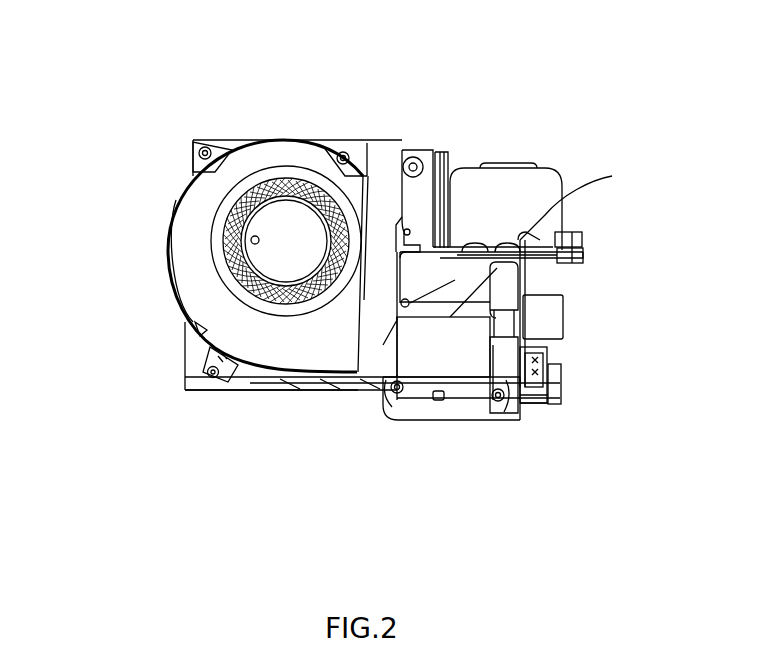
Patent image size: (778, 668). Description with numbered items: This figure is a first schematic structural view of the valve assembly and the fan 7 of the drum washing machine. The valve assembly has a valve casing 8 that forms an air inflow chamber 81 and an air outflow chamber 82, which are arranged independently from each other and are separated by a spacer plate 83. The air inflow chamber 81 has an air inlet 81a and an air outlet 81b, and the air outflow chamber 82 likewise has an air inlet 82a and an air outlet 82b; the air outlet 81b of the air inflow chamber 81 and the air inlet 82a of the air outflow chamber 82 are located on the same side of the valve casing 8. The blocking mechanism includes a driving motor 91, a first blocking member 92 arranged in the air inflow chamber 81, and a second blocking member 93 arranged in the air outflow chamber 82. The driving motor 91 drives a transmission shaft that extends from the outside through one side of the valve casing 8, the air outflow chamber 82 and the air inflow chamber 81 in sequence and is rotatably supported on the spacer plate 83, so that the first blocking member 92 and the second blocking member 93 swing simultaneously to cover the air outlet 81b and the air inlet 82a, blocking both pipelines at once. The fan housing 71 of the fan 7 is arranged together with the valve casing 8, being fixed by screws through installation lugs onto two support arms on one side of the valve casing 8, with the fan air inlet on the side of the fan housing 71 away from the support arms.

The fan 7 is at (282, 182).
The fan housing 71 is at (190, 243).
The valve casing 8 is at (440, 420).
The air inflow chamber 81 is at (445, 357).
The air inlet of the air inflow chamber 81a is at (398, 325).
The air outlet of the air inflow chamber 81b is at (560, 395).
The air outflow chamber 82 is at (345, 390).
The air inlet of the air outflow chamber 82a is at (577, 292).
The air outlet of the air outflow chamber 82b is at (443, 197).
The spacer plate 83 is at (563, 193).
The driving motor 91 is at (520, 205).
The first blocking member 92 is at (523, 407).
The second blocking member 93 is at (552, 338).